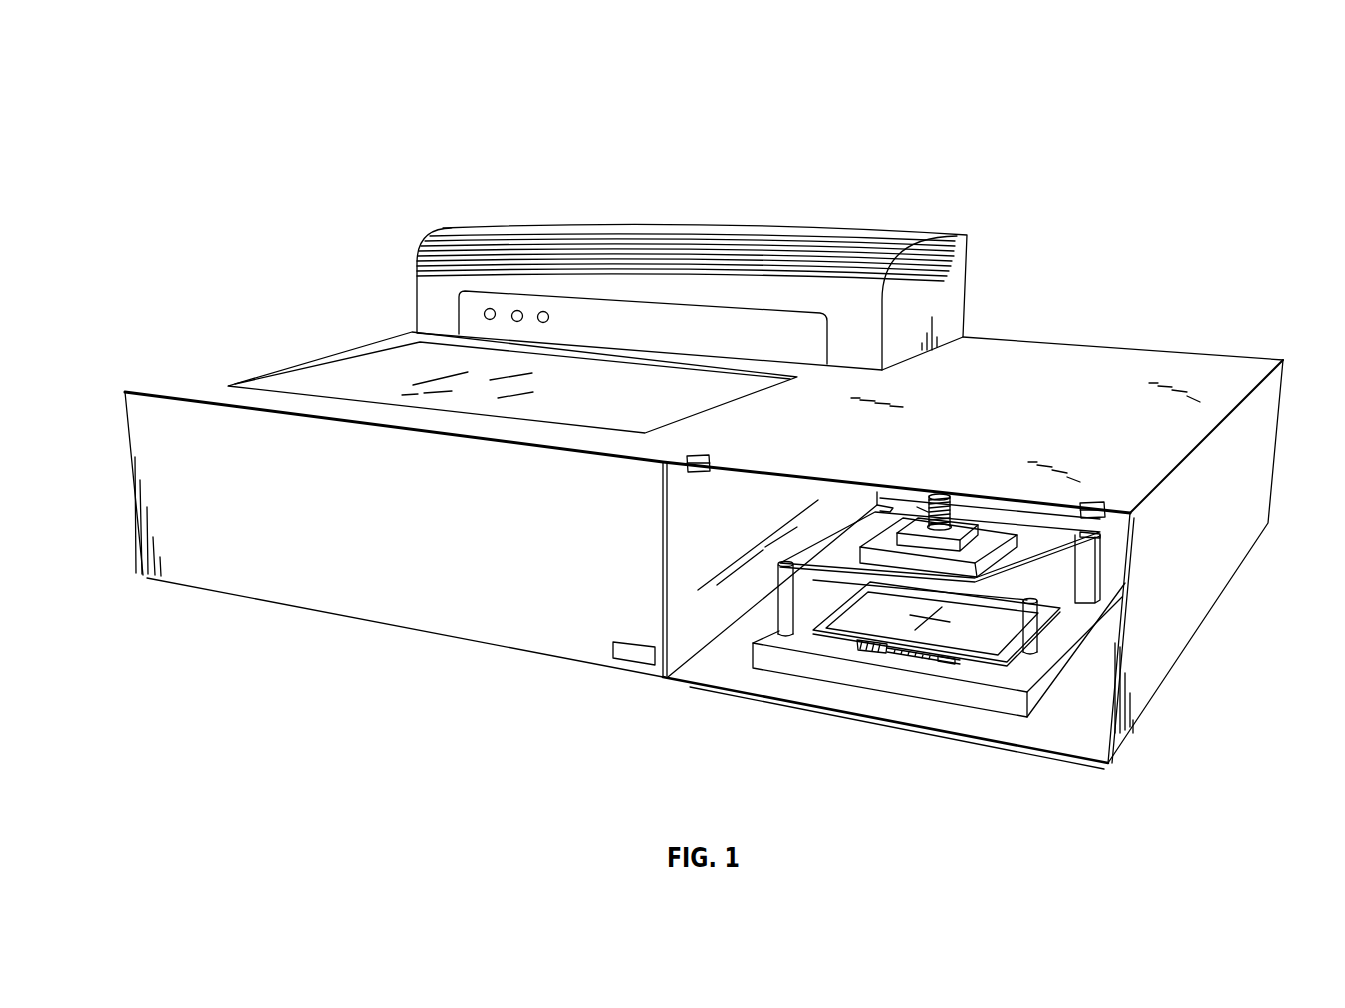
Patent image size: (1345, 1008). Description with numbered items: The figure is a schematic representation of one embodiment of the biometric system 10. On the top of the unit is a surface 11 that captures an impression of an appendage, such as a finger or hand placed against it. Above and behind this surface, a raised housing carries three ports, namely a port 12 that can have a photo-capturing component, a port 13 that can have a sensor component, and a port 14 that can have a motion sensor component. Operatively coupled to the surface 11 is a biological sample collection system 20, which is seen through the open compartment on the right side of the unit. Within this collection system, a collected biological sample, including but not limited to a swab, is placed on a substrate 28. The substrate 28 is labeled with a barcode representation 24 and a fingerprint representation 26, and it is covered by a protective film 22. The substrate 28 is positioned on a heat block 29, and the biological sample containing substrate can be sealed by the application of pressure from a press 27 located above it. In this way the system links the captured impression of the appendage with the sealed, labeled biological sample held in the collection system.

The biometric system 10 is at (1088, 160).
The surface 11 is at (367, 383).
The port 12 is at (545, 311).
The port 13 is at (518, 310).
The port 14 is at (490, 308).
The biological sample collection system 20 is at (745, 525).
The protective film 22 is at (1000, 643).
The barcode representation 24 is at (917, 657).
The fingerprint representation 26 is at (850, 640).
The press 27 is at (1042, 558).
The substrate 28 is at (811, 622).
The heat block 29 is at (781, 642).